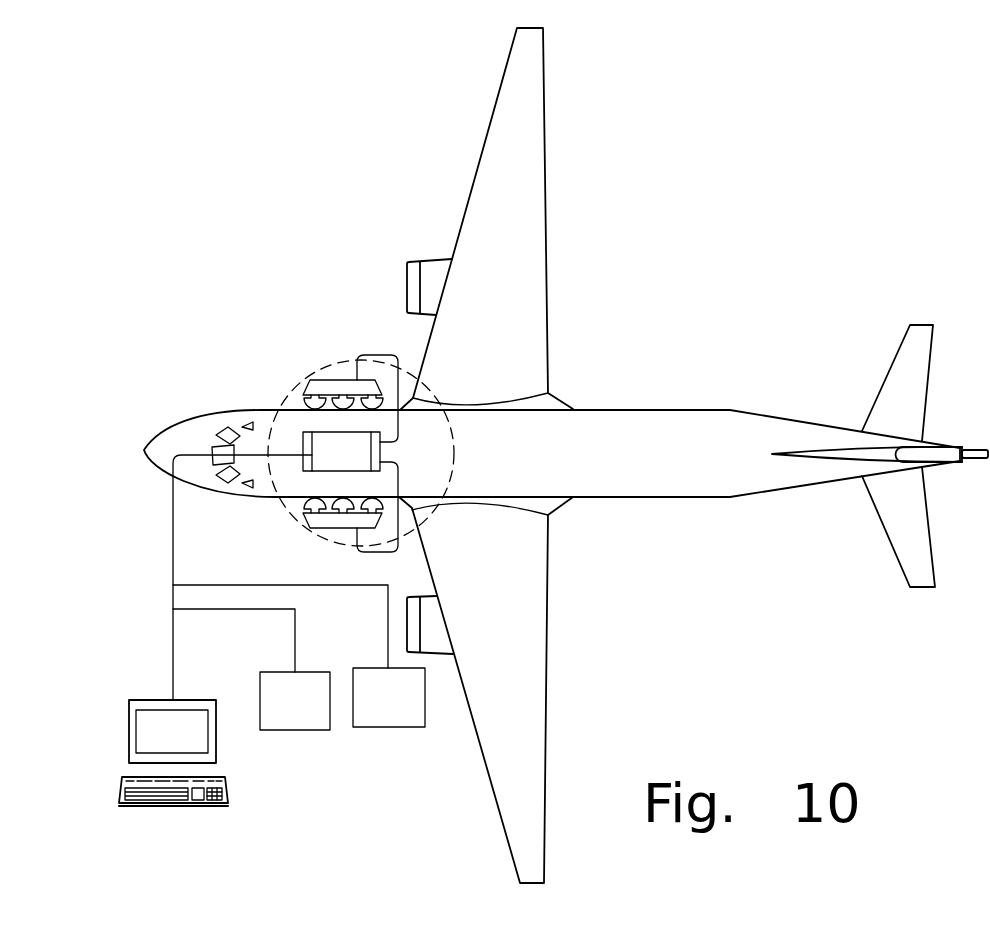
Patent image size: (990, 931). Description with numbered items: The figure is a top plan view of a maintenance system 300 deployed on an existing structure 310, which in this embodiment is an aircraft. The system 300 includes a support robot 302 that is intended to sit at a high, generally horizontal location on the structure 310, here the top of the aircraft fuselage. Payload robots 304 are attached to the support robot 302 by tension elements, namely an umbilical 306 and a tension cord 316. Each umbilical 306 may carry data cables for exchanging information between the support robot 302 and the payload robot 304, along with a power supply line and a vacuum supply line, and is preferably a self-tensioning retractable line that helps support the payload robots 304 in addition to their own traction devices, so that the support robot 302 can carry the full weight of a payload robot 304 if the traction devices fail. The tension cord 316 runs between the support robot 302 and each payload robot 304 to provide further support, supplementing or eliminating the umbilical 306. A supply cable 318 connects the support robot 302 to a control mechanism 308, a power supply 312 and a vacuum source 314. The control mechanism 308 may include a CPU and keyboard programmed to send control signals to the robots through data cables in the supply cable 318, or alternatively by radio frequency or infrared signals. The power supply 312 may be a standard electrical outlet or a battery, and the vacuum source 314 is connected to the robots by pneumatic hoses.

The system 300 is at (310, 368).
The support robot 302 is at (322, 443).
The payload robot 304 is at (338, 380).
The umbilical 306 is at (398, 467).
The control mechanism 308 is at (129, 725).
The structure 310 is at (520, 580).
The power supply 312 is at (397, 727).
The vacuum source 314 is at (308, 732).
The tension cord 316 is at (417, 375).
The supply cable 318 is at (172, 533).